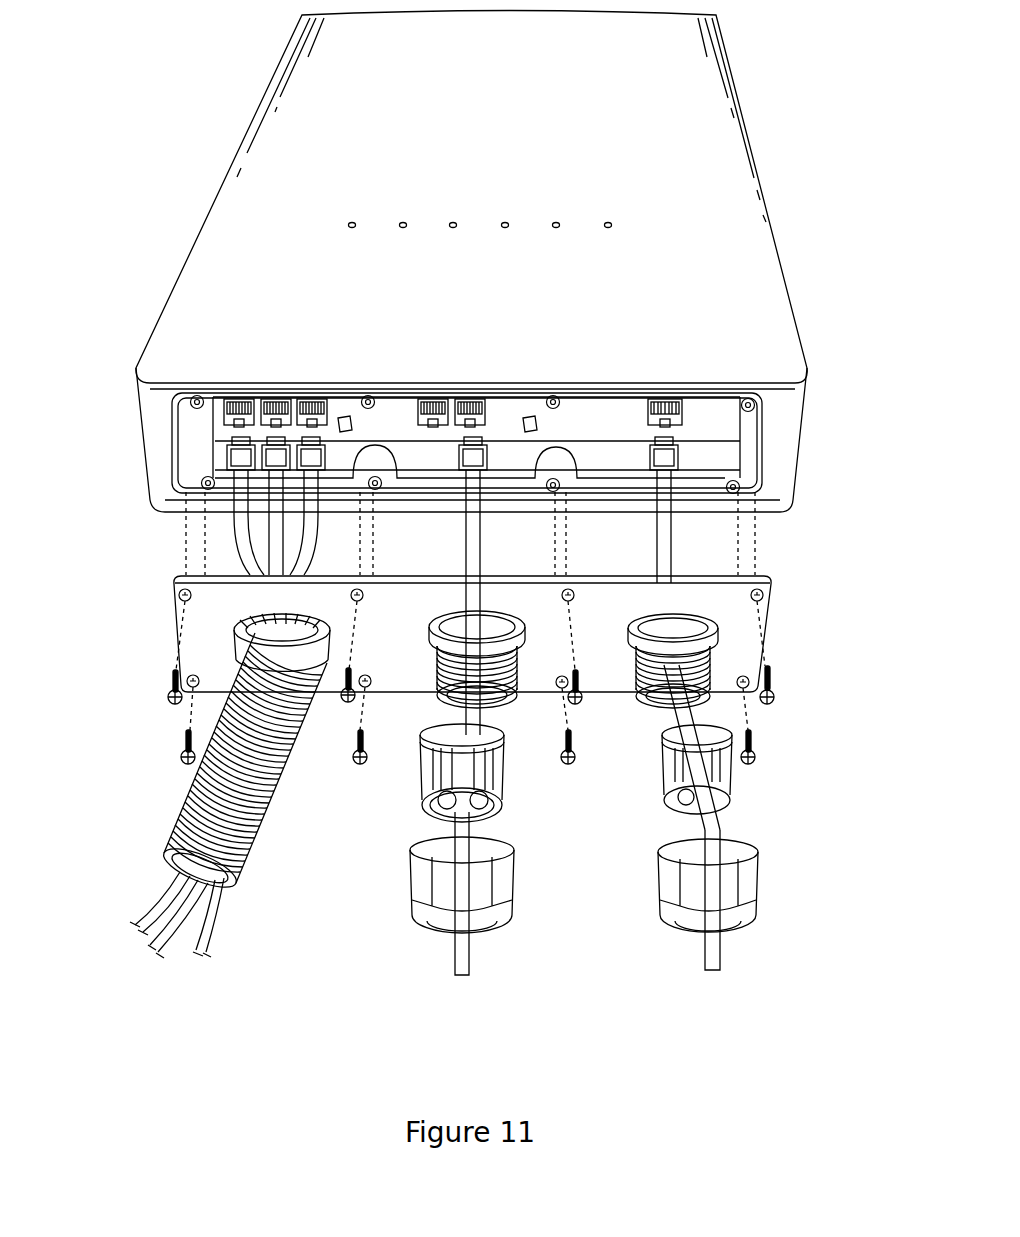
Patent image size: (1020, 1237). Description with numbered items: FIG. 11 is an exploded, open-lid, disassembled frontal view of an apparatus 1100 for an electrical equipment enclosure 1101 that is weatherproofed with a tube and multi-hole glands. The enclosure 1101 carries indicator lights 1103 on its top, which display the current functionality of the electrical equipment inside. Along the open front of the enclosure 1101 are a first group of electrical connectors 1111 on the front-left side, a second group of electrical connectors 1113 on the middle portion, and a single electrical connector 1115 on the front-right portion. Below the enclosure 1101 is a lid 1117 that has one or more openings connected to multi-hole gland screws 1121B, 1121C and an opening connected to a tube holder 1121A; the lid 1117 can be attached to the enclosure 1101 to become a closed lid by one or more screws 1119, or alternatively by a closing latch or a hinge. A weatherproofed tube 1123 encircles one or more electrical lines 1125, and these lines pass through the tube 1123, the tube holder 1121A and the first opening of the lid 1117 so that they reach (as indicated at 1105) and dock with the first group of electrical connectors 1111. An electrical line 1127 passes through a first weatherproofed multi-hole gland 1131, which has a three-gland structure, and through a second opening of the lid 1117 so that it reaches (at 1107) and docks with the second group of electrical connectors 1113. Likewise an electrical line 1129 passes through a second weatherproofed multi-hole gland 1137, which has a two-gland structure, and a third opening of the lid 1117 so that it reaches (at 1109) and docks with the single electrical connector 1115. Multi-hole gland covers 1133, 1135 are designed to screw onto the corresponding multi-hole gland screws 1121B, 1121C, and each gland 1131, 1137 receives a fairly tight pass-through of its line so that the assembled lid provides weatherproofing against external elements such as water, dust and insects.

The apparatus 1100 is at (483, 1066).
The electrical equipment enclosure 1101 is at (292, 160).
The indicator lights 1103 is at (338, 225).
The electrical lines reaching the first group of connectors 1105 is at (238, 532).
The electrical line reaching the second group of connectors 1107 is at (457, 550).
The electrical line reaching the single connector 1109 is at (660, 544).
The first group of electrical connectors 1111 is at (272, 397).
The second group of electrical connectors 1113 is at (466, 397).
The single electrical connector 1115 is at (650, 397).
The lid 1117 is at (717, 617).
The screws 1119 is at (770, 703).
The tube holder 1121A is at (229, 627).
The multi-hole gland screw 1121B is at (473, 615).
The multi-hole gland screw 1121C is at (658, 615).
The weatherproofed tube 1123 is at (183, 790).
The electrical lines 1125 is at (152, 893).
The electrical line 1127 is at (442, 962).
The electrical line 1129 is at (700, 952).
The first multi-hole gland 1131 is at (478, 810).
The multi-hole gland cover 1133 is at (480, 866).
The multi-hole gland cover 1135 is at (715, 862).
The second multi-hole gland 1137 is at (676, 802).